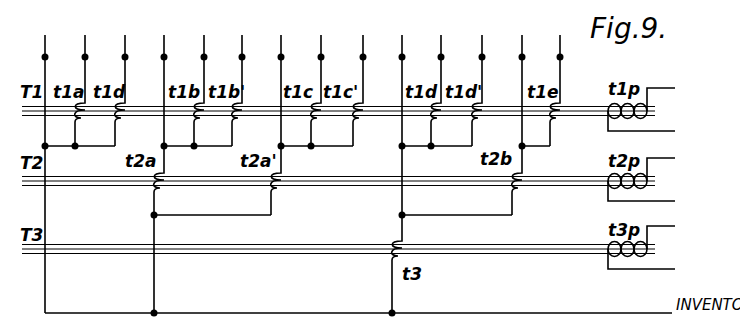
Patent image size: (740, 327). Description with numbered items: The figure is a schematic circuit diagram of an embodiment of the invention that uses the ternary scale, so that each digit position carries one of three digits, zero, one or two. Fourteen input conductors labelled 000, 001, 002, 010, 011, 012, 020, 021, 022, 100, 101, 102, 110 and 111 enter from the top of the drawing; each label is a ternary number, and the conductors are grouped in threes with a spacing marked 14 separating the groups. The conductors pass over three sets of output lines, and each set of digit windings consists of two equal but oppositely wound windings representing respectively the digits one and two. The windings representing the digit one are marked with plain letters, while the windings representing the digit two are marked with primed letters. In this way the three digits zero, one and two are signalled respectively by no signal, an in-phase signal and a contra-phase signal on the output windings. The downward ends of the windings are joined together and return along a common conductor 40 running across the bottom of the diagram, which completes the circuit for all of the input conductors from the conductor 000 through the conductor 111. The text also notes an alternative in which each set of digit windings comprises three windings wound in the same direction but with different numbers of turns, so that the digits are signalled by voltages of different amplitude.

The spacing between wire groups 14 is at (163, 45).
The common return conductor 40 is at (645, 312).
The input wire 000 is at (45, 163).
The input wire 001 is at (85, 80).
The input wire 002 is at (125, 80).
The input wire 010 is at (164, 163).
The input wire 011 is at (204, 80).
The input wire 012 is at (242, 80).
The input wire 020 is at (281, 114).
The input wire 021 is at (321, 80).
The input wire 022 is at (363, 80).
The input wire 100 is at (402, 163).
The input wire 101 is at (441, 80).
The input wire 102 is at (482, 80).
The input wire 110 is at (522, 114).
The input wire 111 is at (560, 80).